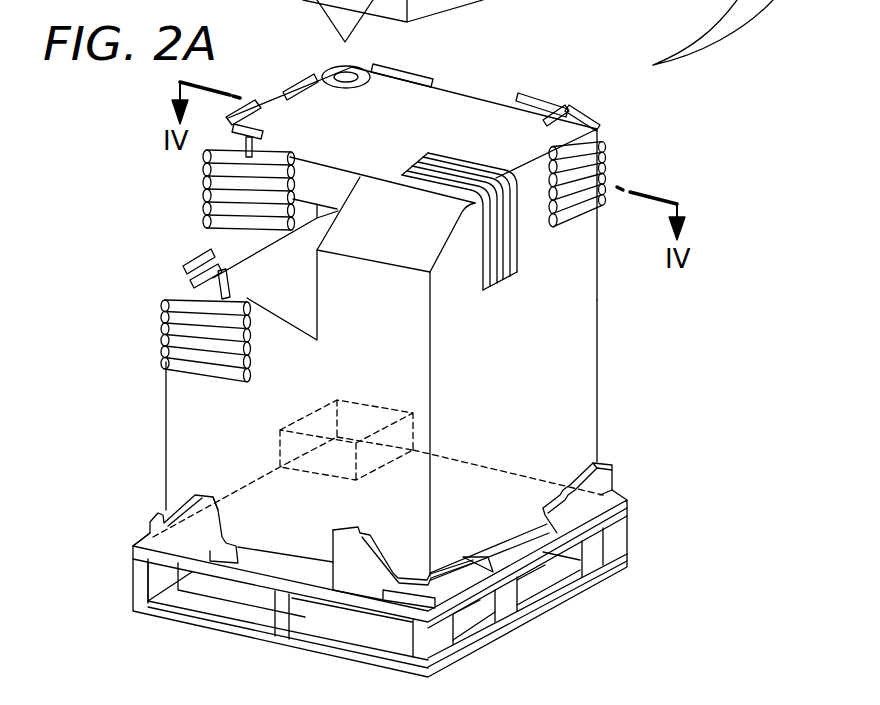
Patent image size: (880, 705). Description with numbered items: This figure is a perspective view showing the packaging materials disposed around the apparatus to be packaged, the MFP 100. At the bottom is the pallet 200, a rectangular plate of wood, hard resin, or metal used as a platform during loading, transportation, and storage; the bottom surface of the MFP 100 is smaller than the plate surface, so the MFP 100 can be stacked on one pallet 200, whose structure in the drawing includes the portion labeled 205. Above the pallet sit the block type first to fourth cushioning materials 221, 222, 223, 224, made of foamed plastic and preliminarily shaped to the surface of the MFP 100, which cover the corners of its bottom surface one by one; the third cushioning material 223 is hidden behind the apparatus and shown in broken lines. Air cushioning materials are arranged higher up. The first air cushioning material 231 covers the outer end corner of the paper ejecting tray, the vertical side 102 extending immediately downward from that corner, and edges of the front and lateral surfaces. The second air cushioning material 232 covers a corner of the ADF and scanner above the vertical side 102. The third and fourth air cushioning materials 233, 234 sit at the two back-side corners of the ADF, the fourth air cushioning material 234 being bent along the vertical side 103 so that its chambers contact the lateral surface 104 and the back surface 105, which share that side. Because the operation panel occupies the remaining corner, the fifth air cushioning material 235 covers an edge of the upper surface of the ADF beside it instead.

The MFP 100 is at (682, 163).
The vertical side 102 is at (167, 390).
The vertical side 103 is at (597, 258).
The lateral surface 104 is at (550, 353).
The back surface 105 is at (483, 100).
The pallet 200 is at (645, 537).
The pallet block 205 is at (207, 540).
The first cushioning material 221 is at (357, 578).
The second cushioning material 222 is at (206, 540).
The third cushioning material 223 is at (280, 445).
The fourth cushioning material 224 is at (613, 482).
The first air cushioning material 231 is at (162, 327).
The second air cushioning material 232 is at (207, 175).
The third air cushioning material 233 is at (298, 72).
The fourth air cushioning material 234 is at (606, 157).
The fifth air cushioning material 235 is at (517, 246).